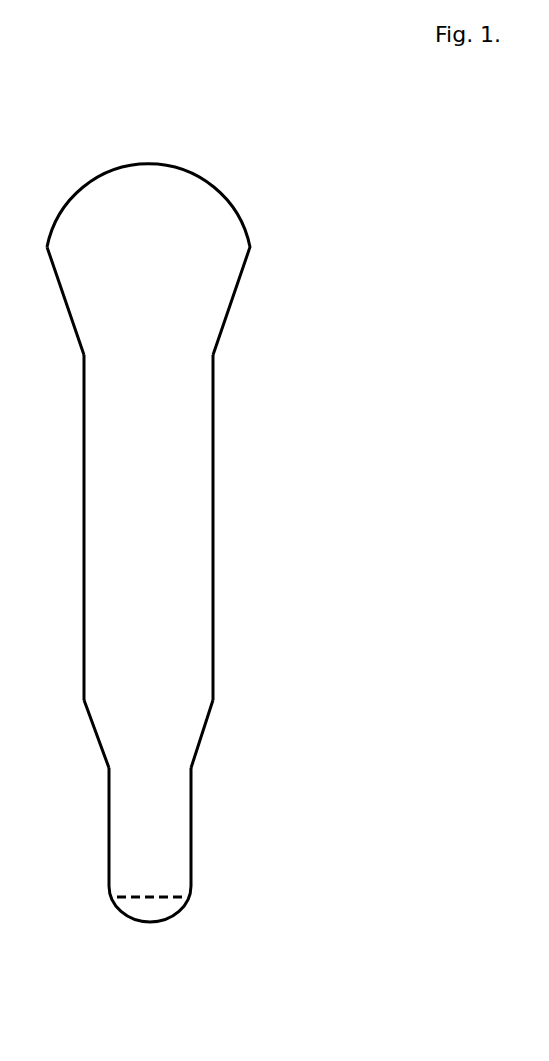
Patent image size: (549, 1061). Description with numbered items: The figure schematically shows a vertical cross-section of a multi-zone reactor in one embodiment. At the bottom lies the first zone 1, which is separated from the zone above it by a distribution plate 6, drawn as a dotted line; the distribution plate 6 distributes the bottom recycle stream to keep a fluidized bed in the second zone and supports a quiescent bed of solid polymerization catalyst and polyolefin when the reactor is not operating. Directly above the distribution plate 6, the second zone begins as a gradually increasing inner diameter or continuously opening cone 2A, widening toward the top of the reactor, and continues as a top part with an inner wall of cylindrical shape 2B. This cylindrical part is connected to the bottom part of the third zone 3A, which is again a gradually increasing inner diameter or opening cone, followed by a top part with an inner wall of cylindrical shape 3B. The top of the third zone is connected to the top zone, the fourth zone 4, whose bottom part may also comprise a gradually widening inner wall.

The first zone 1 is at (172, 543).
The continuously opening cone 2A is at (145, 888).
The cylindrical shape 2B is at (150, 827).
The bottom part of the third zone 3A is at (148, 734).
The cylindrical shape 3B is at (148, 527).
The fourth zone 4 is at (148, 259).
The distribution plate 6 is at (173, 897).